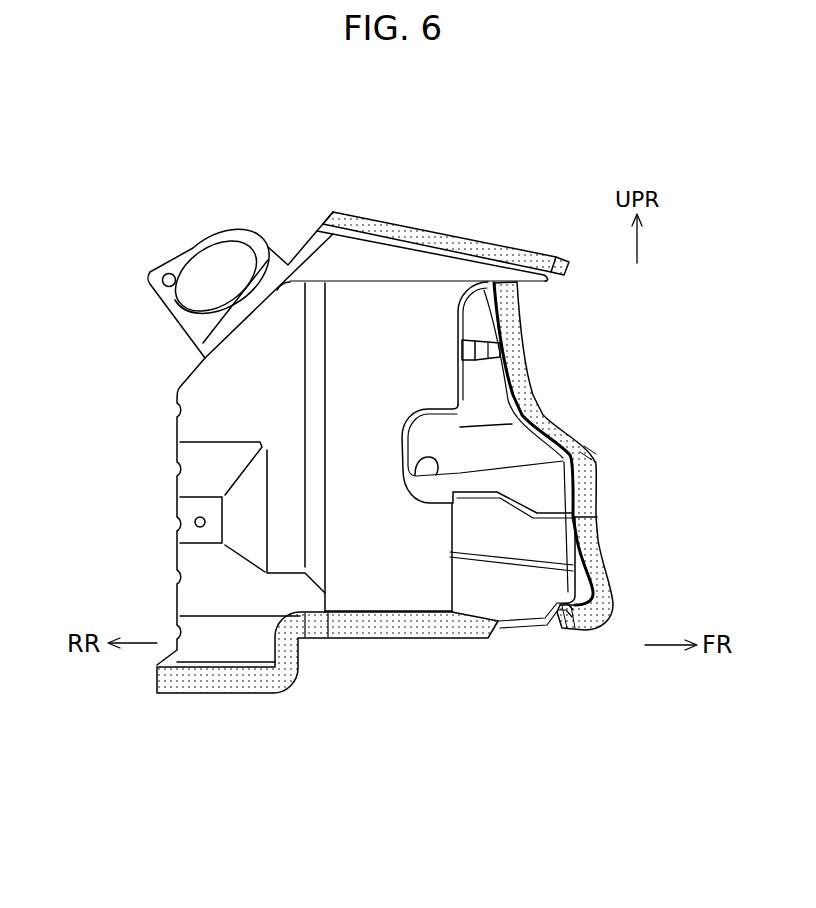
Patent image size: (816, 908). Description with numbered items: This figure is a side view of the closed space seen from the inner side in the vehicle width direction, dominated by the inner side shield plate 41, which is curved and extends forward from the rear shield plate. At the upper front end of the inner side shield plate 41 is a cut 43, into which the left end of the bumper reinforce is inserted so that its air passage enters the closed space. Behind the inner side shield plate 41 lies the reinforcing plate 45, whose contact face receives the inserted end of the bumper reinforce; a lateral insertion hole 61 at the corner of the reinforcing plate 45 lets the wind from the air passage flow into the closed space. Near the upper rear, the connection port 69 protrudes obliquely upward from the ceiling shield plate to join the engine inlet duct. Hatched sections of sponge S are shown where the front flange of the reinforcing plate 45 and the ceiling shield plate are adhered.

The inner side shield plate 41 is at (378, 585).
The cut 43 is at (460, 317).
The reinforcing plate 45 is at (510, 448).
The insertion hole 61 is at (464, 346).
The connection port 69 is at (242, 241).
The sponge S is at (484, 244).